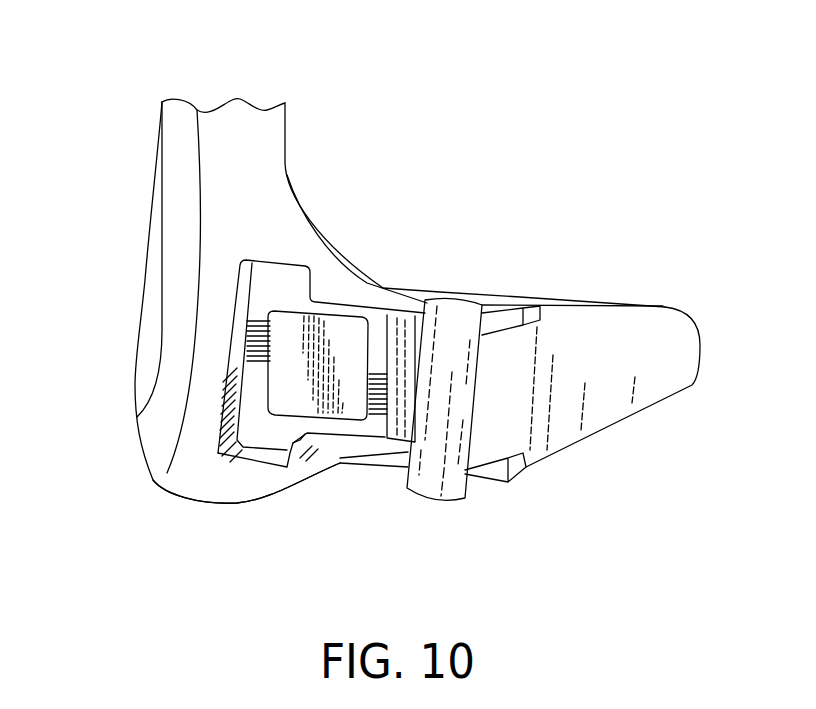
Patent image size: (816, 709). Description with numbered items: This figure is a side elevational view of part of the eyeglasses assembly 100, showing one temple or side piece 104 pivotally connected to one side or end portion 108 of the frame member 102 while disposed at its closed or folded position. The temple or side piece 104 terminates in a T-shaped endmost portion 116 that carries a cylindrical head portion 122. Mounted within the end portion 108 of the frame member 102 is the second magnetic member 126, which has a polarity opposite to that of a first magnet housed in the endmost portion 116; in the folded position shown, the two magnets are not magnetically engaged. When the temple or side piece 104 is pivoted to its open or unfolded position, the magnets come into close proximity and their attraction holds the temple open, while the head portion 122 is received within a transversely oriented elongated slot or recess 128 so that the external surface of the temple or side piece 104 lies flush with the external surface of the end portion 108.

The eyeglasses assembly 100 is at (588, 495).
The frame member 102 is at (240, 210).
The temple or side piece 104 is at (650, 375).
The side or end portion of frame member 108 is at (183, 495).
The T-shaped endmost portion of temple 116 is at (442, 393).
The cylindrical head portion 122 is at (445, 502).
The second magnetic member 126 is at (297, 393).
The recess for accommodating head portion 128 is at (210, 373).